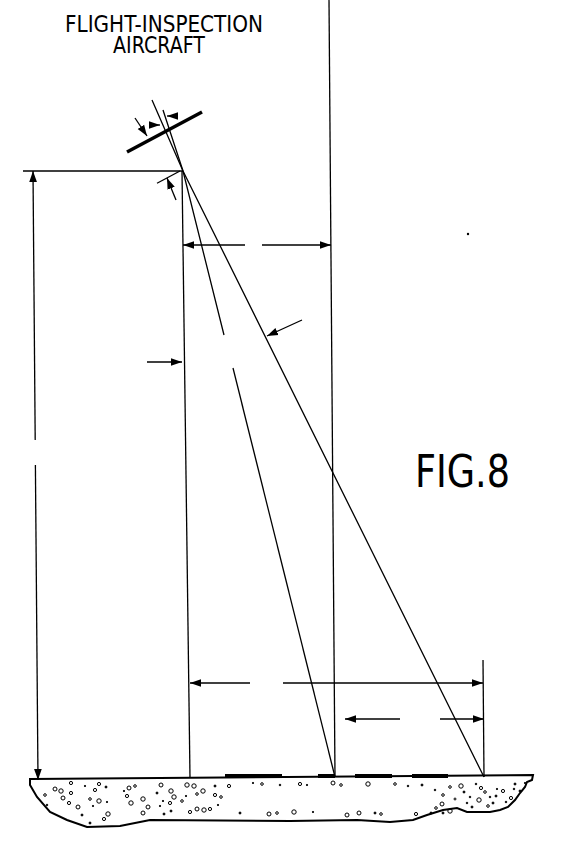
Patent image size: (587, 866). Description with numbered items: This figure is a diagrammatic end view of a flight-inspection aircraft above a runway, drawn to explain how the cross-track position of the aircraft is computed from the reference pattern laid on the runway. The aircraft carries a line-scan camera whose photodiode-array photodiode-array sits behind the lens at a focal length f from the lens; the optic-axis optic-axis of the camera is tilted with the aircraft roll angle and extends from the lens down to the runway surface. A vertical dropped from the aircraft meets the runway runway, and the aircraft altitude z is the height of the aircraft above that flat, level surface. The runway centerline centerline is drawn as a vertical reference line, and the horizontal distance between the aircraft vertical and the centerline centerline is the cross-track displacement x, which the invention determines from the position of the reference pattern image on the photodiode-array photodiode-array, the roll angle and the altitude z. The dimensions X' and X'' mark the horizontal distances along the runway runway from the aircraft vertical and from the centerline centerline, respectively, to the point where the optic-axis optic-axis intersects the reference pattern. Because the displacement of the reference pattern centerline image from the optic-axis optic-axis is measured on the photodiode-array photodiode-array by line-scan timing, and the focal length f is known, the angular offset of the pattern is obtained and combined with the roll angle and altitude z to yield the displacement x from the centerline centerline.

The cross-track displacement x is at (257, 244).
The altitude z is at (103, 475).
The focal length f is at (157, 159).
The distance from aircraft vertical to far reference mark X' is at (336, 681).
The distance from runway centerline to far reference mark X'' is at (414, 718).
The optic axis optic-axis is at (164, 106).
The photosensitive array photodiode-array is at (200, 114).
The runway centerline is at (321, 388).
The element runway is at (281, 801).